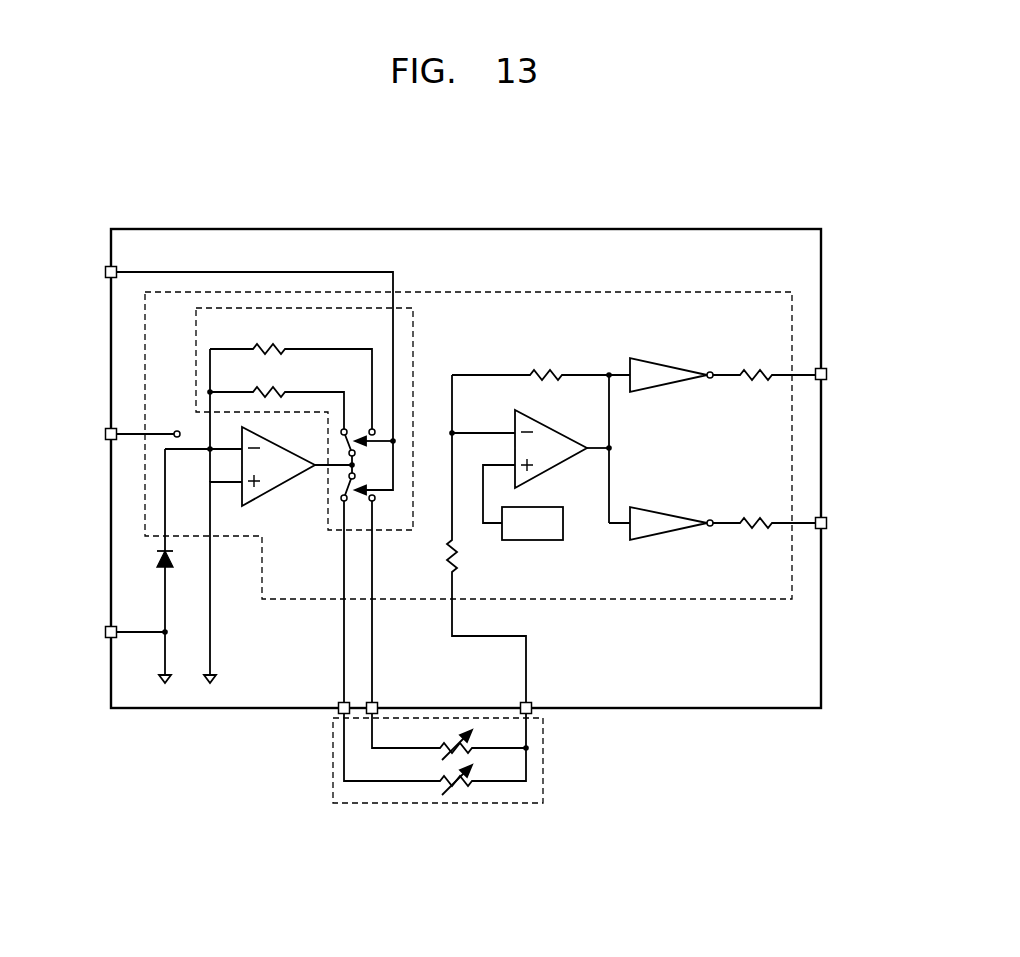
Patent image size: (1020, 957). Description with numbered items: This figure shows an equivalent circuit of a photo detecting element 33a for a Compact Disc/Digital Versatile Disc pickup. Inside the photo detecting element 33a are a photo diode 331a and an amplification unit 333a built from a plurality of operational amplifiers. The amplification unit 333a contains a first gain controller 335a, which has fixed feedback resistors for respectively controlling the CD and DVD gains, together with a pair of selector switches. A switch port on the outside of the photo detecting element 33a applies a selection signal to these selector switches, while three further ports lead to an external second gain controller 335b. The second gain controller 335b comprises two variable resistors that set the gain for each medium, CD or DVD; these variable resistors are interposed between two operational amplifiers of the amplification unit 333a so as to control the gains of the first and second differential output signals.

The photo detecting element 33a is at (741, 205).
The photo diode 331a is at (132, 563).
The amplification unit 333a is at (579, 292).
The first gain controller 335a is at (413, 339).
The second gain controller 335b is at (543, 762).